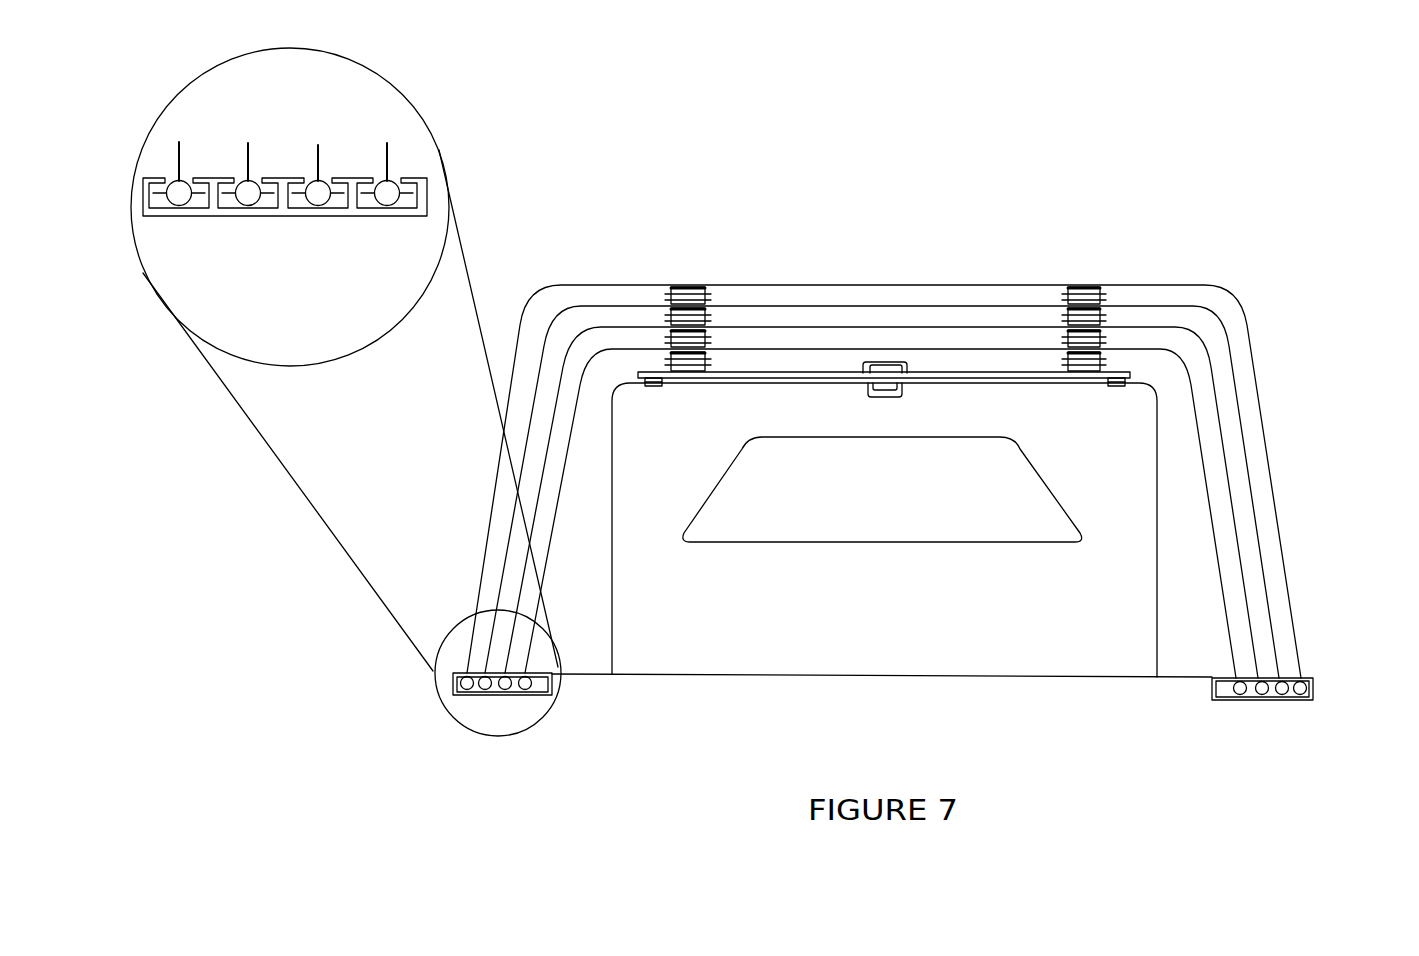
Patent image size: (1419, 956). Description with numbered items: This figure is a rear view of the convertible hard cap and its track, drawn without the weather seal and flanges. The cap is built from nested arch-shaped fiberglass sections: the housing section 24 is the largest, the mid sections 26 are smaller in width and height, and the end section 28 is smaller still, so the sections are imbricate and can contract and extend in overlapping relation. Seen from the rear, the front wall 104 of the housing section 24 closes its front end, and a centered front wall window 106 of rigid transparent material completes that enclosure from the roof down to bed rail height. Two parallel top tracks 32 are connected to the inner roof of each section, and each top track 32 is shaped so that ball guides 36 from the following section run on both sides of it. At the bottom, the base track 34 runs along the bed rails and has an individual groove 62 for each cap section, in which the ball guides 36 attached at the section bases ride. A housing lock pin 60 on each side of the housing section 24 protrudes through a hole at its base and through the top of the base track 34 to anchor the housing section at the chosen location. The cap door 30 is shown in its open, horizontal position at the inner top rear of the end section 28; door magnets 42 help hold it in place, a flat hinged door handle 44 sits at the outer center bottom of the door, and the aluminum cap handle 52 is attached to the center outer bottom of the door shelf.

The housing section 24 is at (1268, 450).
The mid sections 26 is at (1220, 505).
The end section 28 is at (1200, 612).
The cap door 30 is at (1123, 377).
The top track 32 is at (705, 302).
The base track 34 is at (522, 695).
The ball guide 36 is at (467, 683).
The door magnet 42 is at (653, 387).
The door handle 44 is at (910, 367).
The cap handle 52 is at (885, 398).
The housing lock pin 60 is at (1290, 675).
The groove 62 is at (1278, 693).
The front wall 104 is at (1012, 642).
The front wall window 106 is at (753, 513).